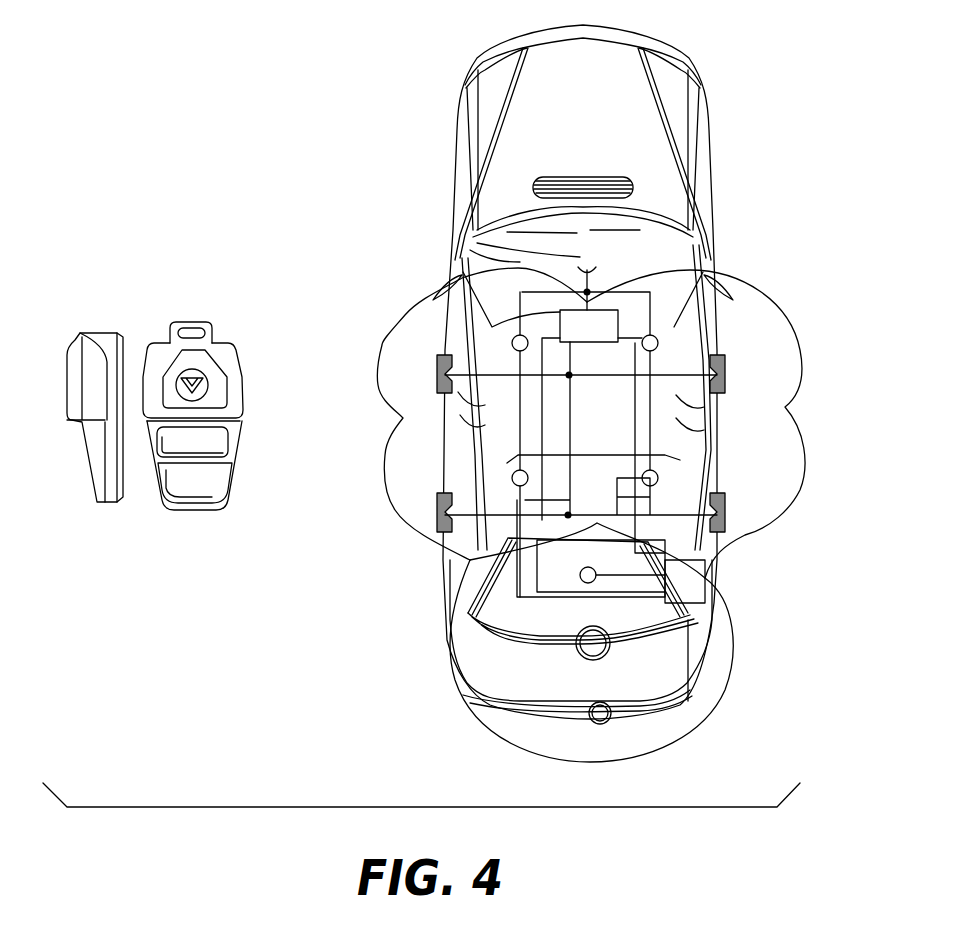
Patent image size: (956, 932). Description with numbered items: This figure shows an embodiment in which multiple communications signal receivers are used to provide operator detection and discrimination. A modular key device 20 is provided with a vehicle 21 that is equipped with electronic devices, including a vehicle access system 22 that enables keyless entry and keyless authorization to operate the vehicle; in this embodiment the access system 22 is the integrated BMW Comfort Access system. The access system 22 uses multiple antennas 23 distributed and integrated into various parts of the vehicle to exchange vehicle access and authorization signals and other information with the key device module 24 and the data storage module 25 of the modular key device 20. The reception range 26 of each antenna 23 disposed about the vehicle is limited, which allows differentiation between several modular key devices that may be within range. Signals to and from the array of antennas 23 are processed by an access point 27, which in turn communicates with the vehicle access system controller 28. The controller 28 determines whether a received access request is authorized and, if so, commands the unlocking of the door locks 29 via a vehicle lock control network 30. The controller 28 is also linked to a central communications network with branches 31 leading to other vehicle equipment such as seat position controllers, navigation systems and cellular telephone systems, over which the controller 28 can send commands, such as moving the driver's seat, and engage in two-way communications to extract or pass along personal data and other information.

The modular key device 20 is at (148, 273).
The vehicle 21 is at (458, 113).
The vehicle access system 22 is at (602, 374).
The antennas 23 is at (507, 493).
The key device module 24 is at (162, 502).
The data storage module 25 is at (211, 320).
The reception range 26 is at (755, 458).
The access point 27 is at (708, 581).
The vehicle access system controller 28 is at (643, 307).
The door locks 29 is at (438, 365).
The vehicle lock control network 30 is at (593, 390).
The network branches 31 is at (510, 260).